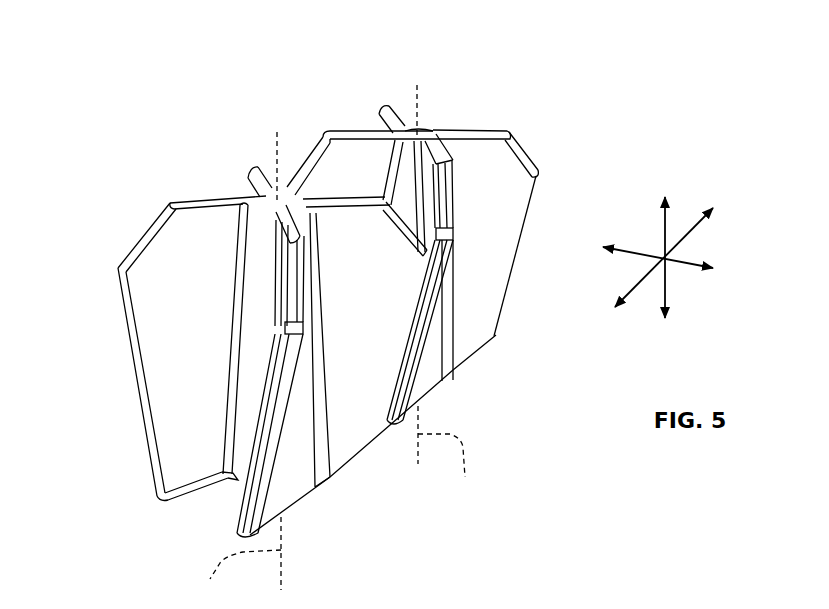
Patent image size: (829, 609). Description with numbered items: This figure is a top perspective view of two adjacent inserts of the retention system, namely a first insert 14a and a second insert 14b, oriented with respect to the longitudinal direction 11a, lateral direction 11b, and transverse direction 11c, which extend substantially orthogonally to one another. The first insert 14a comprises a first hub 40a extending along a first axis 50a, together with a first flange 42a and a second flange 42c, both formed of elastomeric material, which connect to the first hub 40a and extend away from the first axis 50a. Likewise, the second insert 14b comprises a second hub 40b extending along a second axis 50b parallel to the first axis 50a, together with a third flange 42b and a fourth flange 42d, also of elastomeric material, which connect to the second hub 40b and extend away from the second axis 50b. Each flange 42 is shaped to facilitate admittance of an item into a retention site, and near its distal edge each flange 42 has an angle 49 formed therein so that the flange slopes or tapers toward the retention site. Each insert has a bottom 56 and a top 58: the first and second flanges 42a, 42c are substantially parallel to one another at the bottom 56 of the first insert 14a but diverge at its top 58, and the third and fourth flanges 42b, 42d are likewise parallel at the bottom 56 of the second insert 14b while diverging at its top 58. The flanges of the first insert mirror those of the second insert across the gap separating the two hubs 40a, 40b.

The longitudinal direction 11a is at (683, 267).
The lateral direction 11b is at (693, 230).
The transverse direction 11c is at (662, 233).
The first insert 14a is at (197, 162).
The second insert 14b is at (345, 98).
The first hub 40a is at (250, 385).
The second hub 40b is at (422, 130).
The flange 42 is at (203, 320).
The first flange 42a is at (353, 320).
The third flange 42b is at (443, 272).
The second flange 42c is at (257, 170).
The fourth flange 42d is at (340, 182).
The angle 49 is at (312, 171).
The first axis 50a is at (231, 560).
The second axis 50b is at (454, 457).
The bottom 56 is at (467, 372).
The top 58 is at (338, 125).